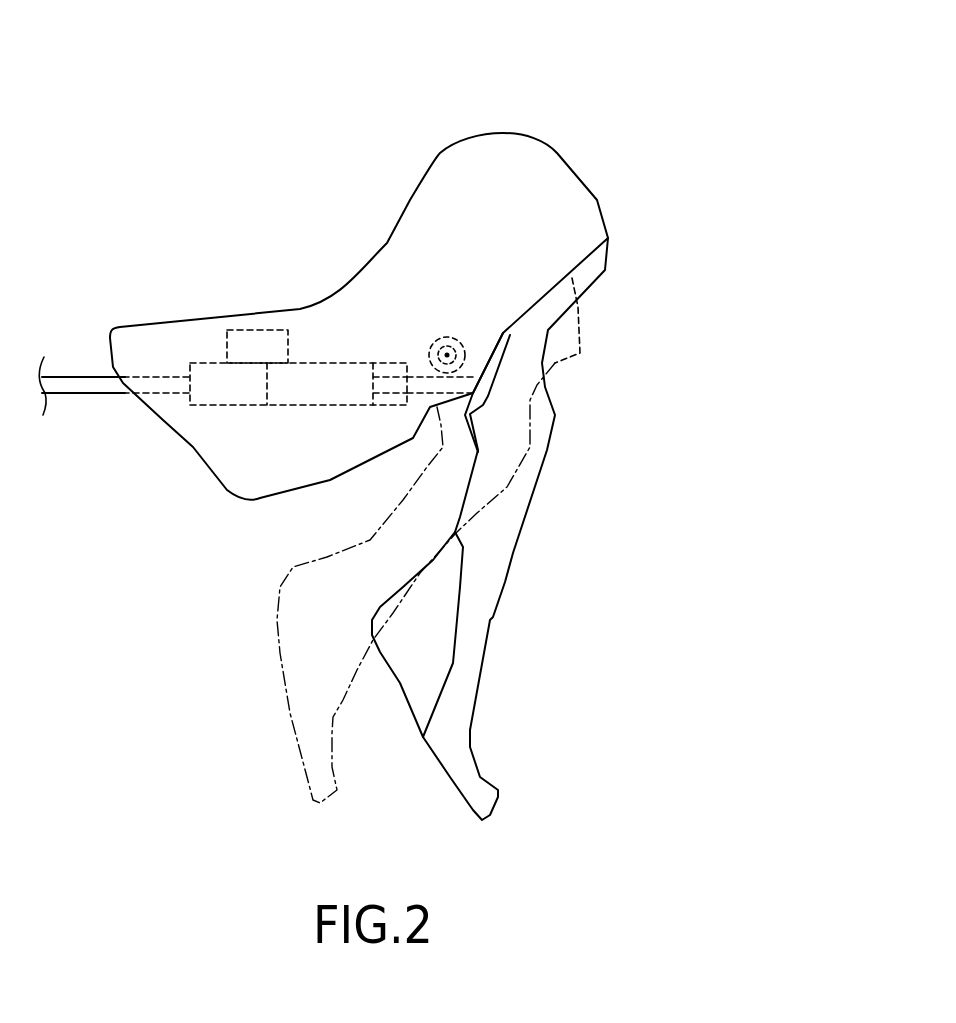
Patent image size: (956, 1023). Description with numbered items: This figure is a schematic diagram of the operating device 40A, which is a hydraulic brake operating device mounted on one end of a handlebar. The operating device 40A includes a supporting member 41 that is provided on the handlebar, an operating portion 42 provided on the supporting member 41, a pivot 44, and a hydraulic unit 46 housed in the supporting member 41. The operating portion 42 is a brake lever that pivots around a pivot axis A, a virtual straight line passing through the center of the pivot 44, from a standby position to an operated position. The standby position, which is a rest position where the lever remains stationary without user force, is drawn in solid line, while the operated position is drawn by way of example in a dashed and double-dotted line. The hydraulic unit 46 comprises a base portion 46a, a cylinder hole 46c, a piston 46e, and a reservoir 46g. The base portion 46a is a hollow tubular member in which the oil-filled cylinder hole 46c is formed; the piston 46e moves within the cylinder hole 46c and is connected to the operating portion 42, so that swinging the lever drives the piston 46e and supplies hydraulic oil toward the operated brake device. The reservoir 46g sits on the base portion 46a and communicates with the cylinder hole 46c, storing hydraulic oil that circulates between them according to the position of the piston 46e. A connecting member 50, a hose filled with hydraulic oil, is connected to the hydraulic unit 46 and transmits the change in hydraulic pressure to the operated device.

The operating device 40A is at (626, 99).
The supporting member 41 is at (434, 153).
The operating portion 42 is at (502, 583).
The pivot 44 is at (447, 355).
The pivot axis A is at (465, 360).
The hydraulic unit 46 is at (299, 356).
The base portion 46a is at (320, 363).
The cylinder hole 46c is at (228, 403).
The piston 46e is at (317, 395).
The reservoir 46g is at (248, 330).
The connecting member 50 is at (82, 377).